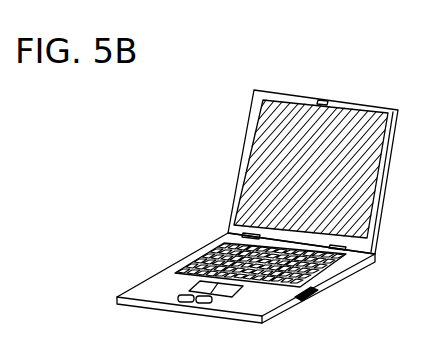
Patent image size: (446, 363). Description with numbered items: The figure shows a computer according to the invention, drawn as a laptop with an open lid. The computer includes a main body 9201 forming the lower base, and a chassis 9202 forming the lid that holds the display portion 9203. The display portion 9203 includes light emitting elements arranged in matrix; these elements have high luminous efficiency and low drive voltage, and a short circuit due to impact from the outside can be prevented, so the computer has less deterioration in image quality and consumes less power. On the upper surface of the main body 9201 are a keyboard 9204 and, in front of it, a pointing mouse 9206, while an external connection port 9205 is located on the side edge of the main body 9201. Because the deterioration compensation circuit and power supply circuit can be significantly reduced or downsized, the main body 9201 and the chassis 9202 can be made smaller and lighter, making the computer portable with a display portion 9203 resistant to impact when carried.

The main body 9201 is at (162, 290).
The chassis 9202 is at (256, 125).
The display portion 9203 is at (258, 177).
The keyboard 9204 is at (333, 272).
The external connection port 9205 is at (311, 297).
The pointing mouse 9206 is at (189, 311).